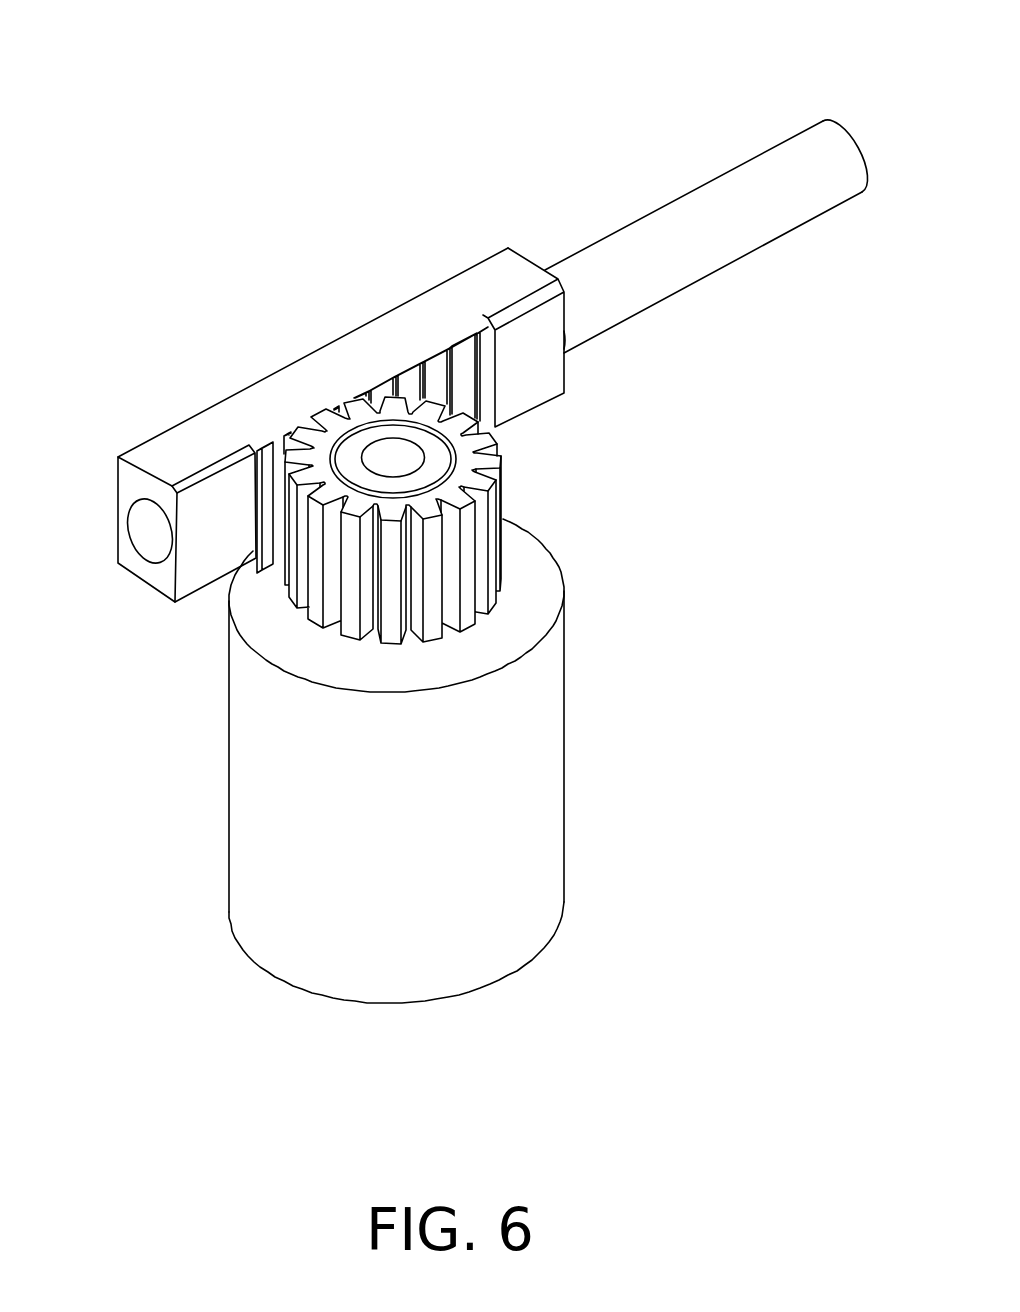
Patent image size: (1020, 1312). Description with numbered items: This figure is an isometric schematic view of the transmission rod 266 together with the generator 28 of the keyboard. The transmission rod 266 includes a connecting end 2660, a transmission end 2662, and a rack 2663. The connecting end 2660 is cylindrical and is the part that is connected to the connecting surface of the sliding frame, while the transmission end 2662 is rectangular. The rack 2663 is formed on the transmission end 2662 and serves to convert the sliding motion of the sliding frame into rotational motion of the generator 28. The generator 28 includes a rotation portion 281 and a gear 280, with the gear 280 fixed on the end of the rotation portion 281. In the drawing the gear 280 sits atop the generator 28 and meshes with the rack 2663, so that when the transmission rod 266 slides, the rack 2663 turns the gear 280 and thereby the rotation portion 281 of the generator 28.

The generator 28 is at (503, 838).
The gear 280 is at (473, 594).
The rotation portion 281 is at (392, 455).
The transmission rod 266 is at (507, 268).
The connecting end 2660 is at (707, 212).
The transmission end 2662 is at (182, 445).
The rack 2663 is at (483, 370).